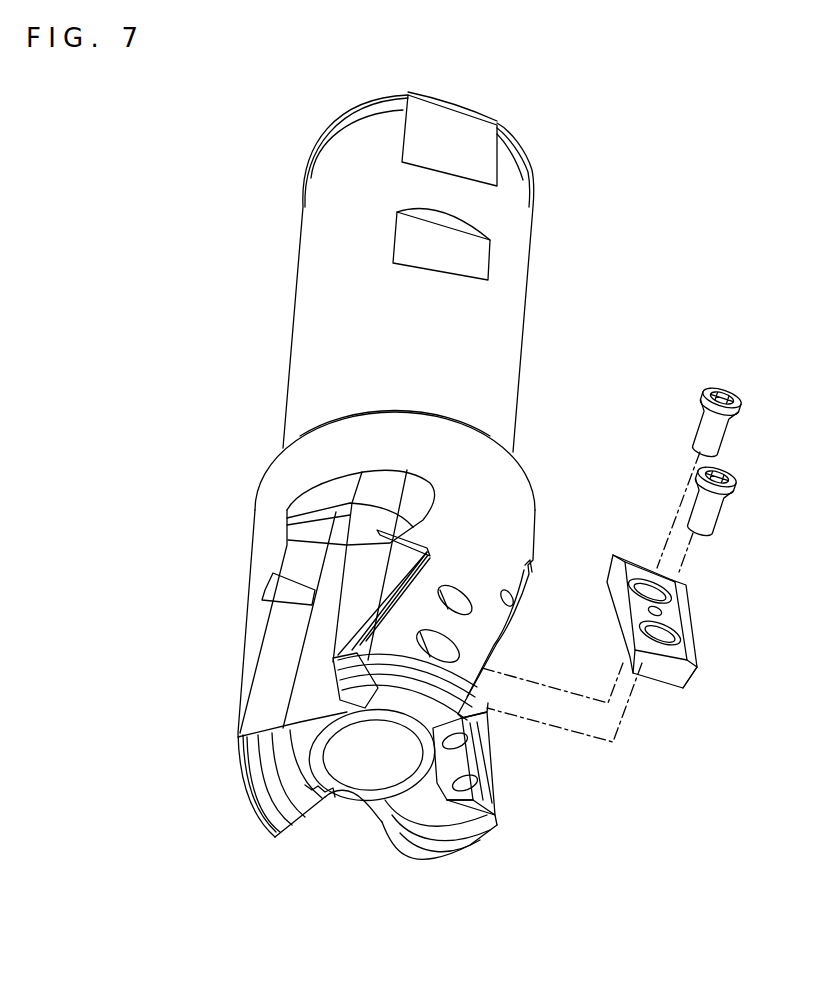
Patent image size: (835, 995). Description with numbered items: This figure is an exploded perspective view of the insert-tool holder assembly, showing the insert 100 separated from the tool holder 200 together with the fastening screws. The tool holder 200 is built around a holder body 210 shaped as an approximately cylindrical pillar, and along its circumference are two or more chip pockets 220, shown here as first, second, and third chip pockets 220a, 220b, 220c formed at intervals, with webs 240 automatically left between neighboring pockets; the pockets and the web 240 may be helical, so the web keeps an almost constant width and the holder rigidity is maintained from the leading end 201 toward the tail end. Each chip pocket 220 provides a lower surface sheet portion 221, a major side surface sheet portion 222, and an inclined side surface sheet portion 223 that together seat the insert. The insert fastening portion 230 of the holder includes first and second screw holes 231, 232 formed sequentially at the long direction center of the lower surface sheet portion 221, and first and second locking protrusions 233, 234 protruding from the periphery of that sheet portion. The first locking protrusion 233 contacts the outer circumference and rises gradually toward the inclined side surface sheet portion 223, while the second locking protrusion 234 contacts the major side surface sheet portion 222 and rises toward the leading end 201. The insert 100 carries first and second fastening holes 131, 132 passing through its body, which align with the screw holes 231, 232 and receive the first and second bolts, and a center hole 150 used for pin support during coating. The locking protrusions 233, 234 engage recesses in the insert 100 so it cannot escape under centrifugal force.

The insert 100 is at (479, 724).
The first fastening hole 131 is at (676, 690).
The second fastening hole 132 is at (650, 575).
The center hole 150 is at (660, 600).
The tool holder 200 is at (276, 450).
The leading end 201 is at (380, 866).
The holder body 210 is at (272, 498).
The chip pockets 220 is at (410, 856).
The first chip pocket 220a is at (346, 806).
The second chip pocket 220b is at (318, 645).
The third chip pocket 220c is at (342, 823).
The lower surface sheet portion 221 is at (485, 830).
The major side surface sheet portion 222 is at (403, 837).
The inclined side surface sheet portion 223 is at (485, 720).
The insert fastening portion 230 is at (560, 840).
The first screw hole 231 is at (488, 810).
The second screw hole 232 is at (488, 733).
The first locking protrusion 233 is at (488, 755).
The second locking protrusion 234 is at (462, 800).
The web 240 is at (316, 783).